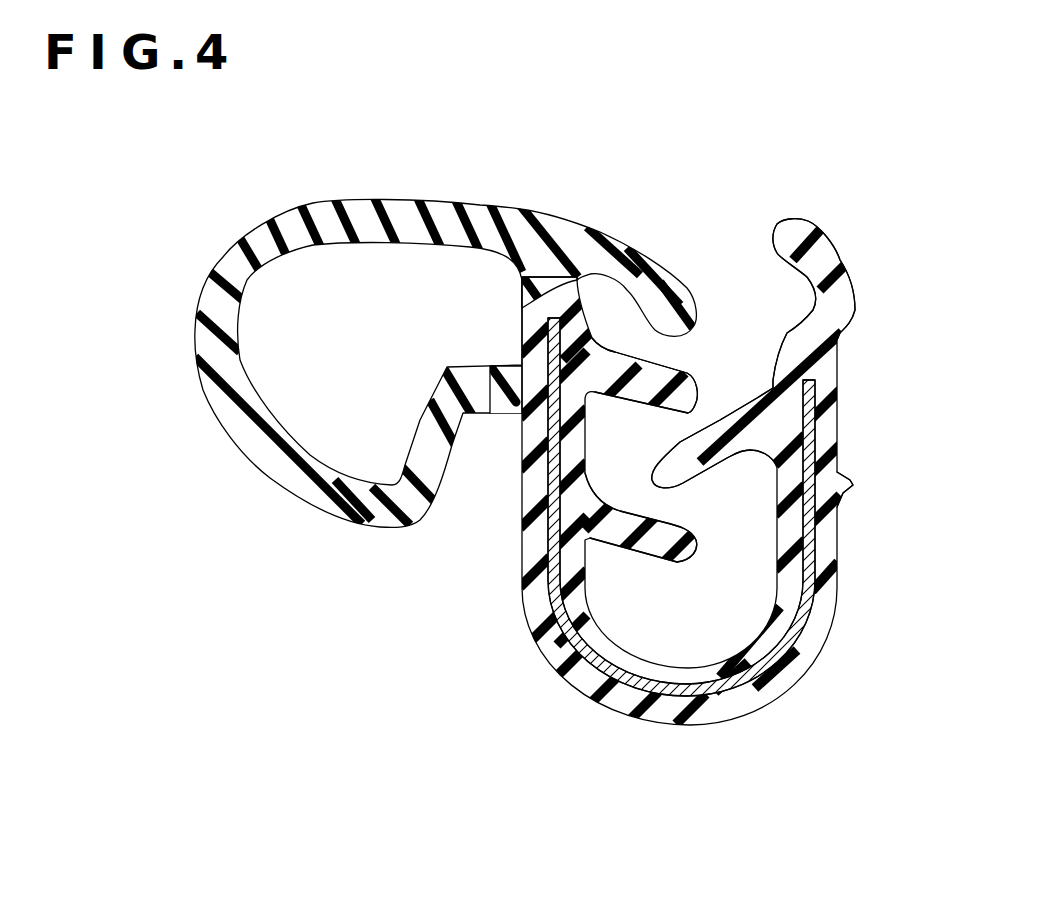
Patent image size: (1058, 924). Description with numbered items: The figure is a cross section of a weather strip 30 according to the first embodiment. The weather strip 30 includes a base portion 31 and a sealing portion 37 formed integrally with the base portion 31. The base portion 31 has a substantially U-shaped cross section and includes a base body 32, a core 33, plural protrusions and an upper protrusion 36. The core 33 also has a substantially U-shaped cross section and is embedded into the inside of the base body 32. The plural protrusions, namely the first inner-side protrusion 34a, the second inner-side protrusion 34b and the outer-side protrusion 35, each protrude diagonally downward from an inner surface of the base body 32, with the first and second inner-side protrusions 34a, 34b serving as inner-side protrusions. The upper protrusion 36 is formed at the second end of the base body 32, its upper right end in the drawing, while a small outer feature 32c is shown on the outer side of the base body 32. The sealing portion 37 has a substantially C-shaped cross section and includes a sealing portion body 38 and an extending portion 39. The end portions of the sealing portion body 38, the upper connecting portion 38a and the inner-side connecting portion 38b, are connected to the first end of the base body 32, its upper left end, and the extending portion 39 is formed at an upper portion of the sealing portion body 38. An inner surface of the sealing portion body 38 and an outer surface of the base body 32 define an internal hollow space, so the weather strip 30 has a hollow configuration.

The weather strip 30 is at (179, 155).
The base portion 31 is at (829, 681).
The base body 32 is at (567, 680).
The protrusion on outer wall 32c is at (847, 484).
The core 33 is at (663, 699).
The first inner-side protrusion 34a is at (608, 404).
The second inner-side protrusion 34b is at (633, 551).
The outer-side protrusion 35 is at (733, 459).
The upper protrusion 36 is at (833, 250).
The sealing portion 37 is at (289, 189).
The sealing portion body 38 is at (196, 336).
The upper connecting portion 38a is at (521, 308).
The inner-side connecting portion 38b is at (490, 414).
The extending portion 39 is at (654, 258).